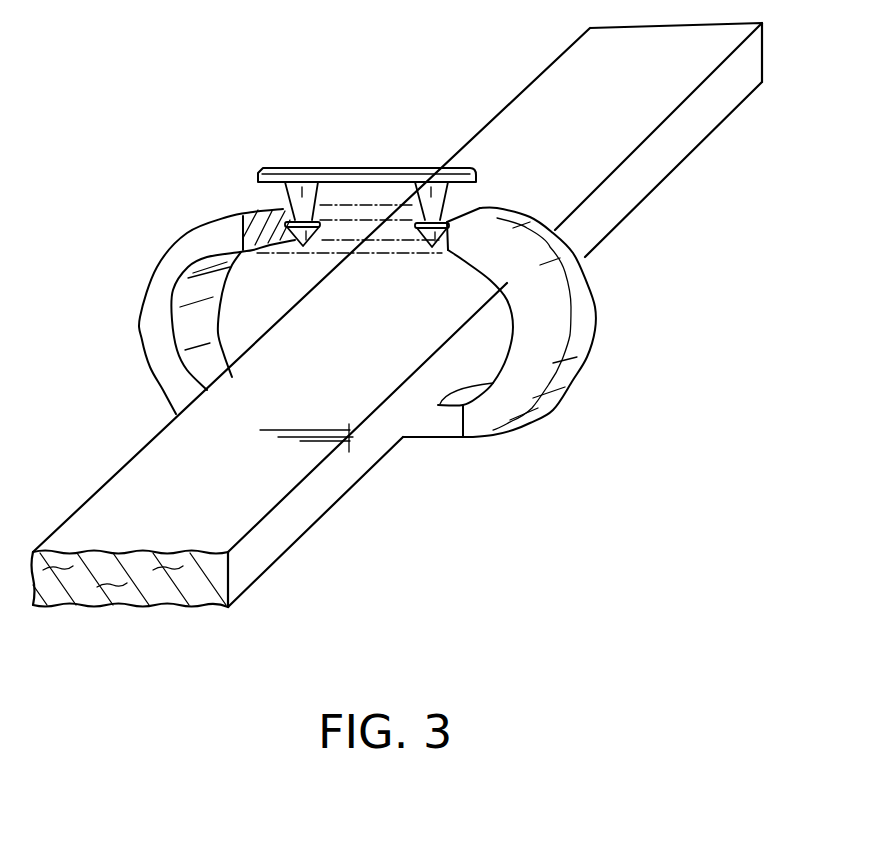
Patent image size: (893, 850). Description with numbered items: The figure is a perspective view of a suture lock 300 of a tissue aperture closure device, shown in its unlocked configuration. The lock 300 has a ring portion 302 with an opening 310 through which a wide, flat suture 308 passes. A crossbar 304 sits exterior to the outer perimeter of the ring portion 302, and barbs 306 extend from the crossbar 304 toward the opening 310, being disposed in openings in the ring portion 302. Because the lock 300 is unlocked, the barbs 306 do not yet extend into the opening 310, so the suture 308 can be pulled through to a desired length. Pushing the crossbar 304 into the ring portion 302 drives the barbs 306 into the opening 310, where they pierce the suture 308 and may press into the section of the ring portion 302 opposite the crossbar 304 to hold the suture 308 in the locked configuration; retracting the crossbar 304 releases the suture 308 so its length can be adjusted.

The suture lock 300 is at (269, 131).
The ring portion 302 is at (150, 292).
The crossbar 304 is at (370, 167).
The barbs 306 is at (445, 245).
The suture 308 is at (537, 78).
The opening 310 is at (237, 297).